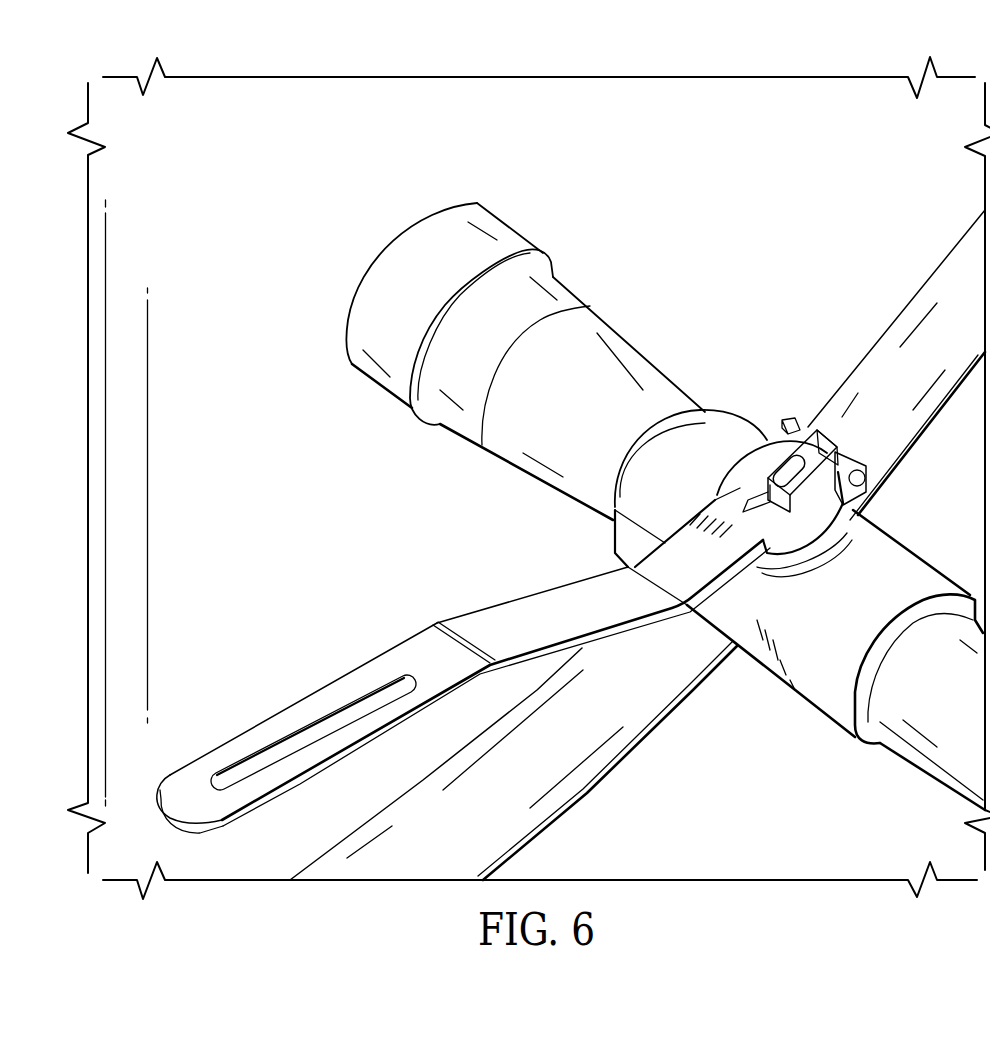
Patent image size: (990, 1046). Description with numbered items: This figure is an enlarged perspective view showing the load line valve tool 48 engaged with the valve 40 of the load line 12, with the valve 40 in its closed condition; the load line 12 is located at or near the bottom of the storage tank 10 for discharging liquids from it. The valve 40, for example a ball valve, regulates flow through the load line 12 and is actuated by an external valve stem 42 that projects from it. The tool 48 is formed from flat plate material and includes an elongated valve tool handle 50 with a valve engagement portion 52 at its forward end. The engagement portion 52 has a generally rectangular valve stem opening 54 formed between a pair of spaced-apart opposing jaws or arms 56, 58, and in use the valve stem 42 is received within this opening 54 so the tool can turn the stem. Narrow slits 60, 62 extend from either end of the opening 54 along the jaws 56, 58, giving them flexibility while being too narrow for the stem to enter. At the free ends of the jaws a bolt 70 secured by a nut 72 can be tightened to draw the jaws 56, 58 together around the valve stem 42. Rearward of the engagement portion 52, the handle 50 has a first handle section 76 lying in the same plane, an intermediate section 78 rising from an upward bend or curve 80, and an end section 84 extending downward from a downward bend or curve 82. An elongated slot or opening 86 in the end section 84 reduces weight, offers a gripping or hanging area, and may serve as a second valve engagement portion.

The storage tank 10 is at (592, 797).
The load line 12 is at (640, 339).
The valve 40 is at (837, 703).
The valve stem 42 is at (790, 470).
The load line valve tool 48 is at (445, 539).
The valve tool handle 50 is at (352, 766).
The valve engagement portion 52 is at (741, 440).
The valve stem opening 54 is at (833, 433).
The jaw or arm 56 is at (803, 517).
The jaw or arm 58 is at (740, 462).
The slit 60 is at (745, 500).
The slit 62 is at (866, 470).
The bolt 70 is at (867, 490).
The nut 72 is at (787, 423).
The first handle section 76 is at (710, 562).
The intermediate section 78 is at (540, 602).
The upward bend or curve 80 is at (670, 597).
The downward bend or curve 82 is at (442, 630).
The end section 84 is at (284, 723).
The elongated slot or opening 86 is at (358, 710).